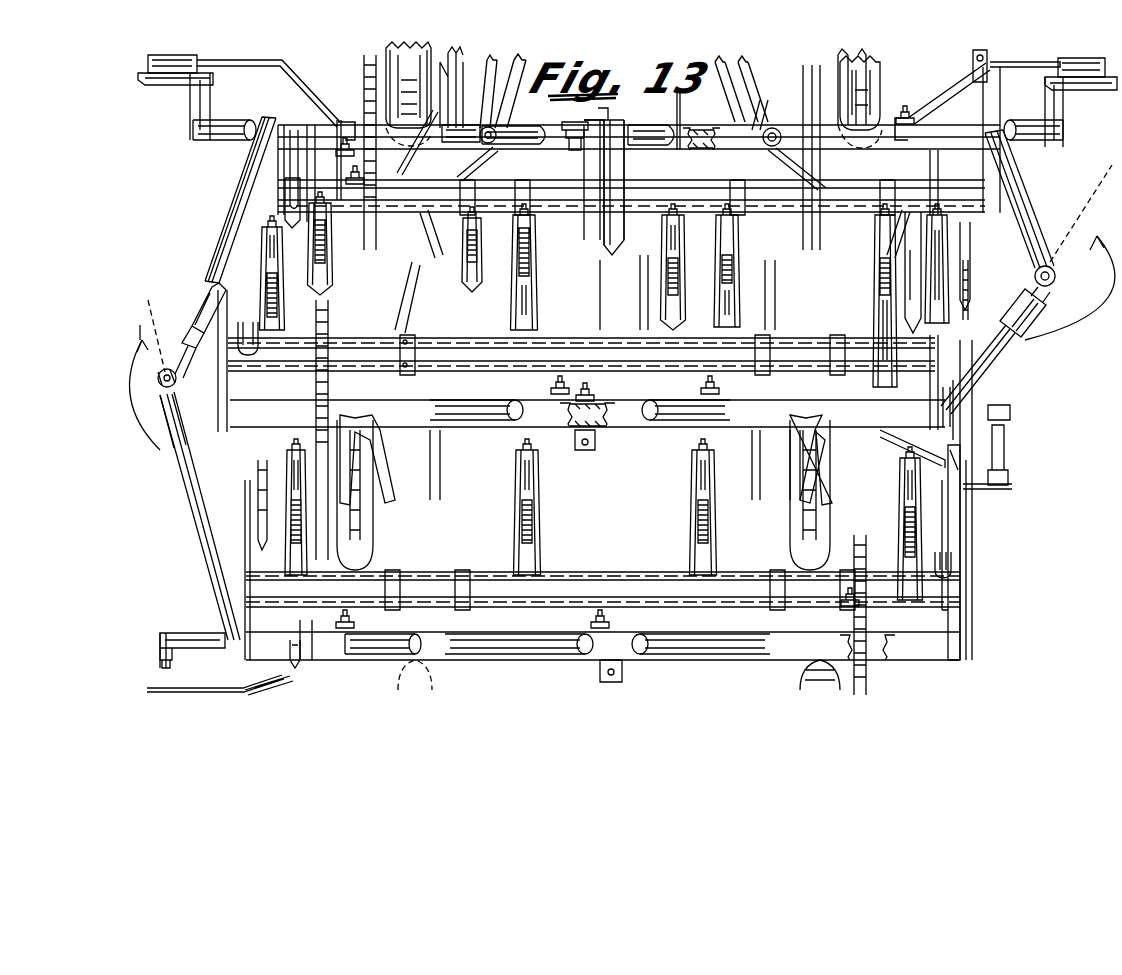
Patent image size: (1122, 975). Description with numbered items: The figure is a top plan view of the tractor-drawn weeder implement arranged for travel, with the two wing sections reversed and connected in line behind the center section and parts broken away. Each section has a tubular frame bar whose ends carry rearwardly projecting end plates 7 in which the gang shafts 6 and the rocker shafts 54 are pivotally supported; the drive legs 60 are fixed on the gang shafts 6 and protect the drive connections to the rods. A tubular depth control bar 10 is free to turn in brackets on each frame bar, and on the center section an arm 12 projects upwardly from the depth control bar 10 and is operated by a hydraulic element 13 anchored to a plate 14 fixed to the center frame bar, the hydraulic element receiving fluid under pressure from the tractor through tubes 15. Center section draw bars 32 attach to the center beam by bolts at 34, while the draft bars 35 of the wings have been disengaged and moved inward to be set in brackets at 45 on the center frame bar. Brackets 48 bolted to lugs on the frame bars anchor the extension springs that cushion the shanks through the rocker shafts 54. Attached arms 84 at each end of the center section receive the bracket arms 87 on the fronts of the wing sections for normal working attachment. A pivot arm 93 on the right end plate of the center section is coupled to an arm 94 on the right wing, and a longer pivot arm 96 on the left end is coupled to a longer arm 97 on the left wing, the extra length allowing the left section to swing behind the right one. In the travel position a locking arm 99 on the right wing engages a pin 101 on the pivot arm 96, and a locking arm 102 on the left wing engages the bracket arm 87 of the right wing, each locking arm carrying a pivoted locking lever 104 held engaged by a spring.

The gang shaft 6 is at (573, 572).
The end plate 7 is at (937, 345).
The depth control bar 10 is at (553, 680).
The arm 12 is at (579, 124).
The hydraulic element 13 is at (607, 187).
The plate 14 is at (152, 675).
The tubes 15 is at (1083, 670).
The center section draw bars 32 is at (748, 58).
The bolts 34 is at (678, 118).
The draft bars 35 is at (748, 78).
The brackets 45 is at (766, 135).
The brackets 48 is at (897, 485).
The rocker shaft 54 is at (663, 597).
The drive legs 60 is at (955, 557).
The attached arms 84 is at (977, 68).
The bracket arms 87 is at (288, 682).
The pivot arm 93 is at (1010, 178).
The arm 94 is at (972, 353).
The pivot arm 96 is at (253, 183).
The arm 97 is at (200, 455).
The locking arm 99 is at (218, 393).
The pin 101 is at (216, 270).
The locking arm 102 is at (970, 528).
The locking lever 104 is at (957, 483).